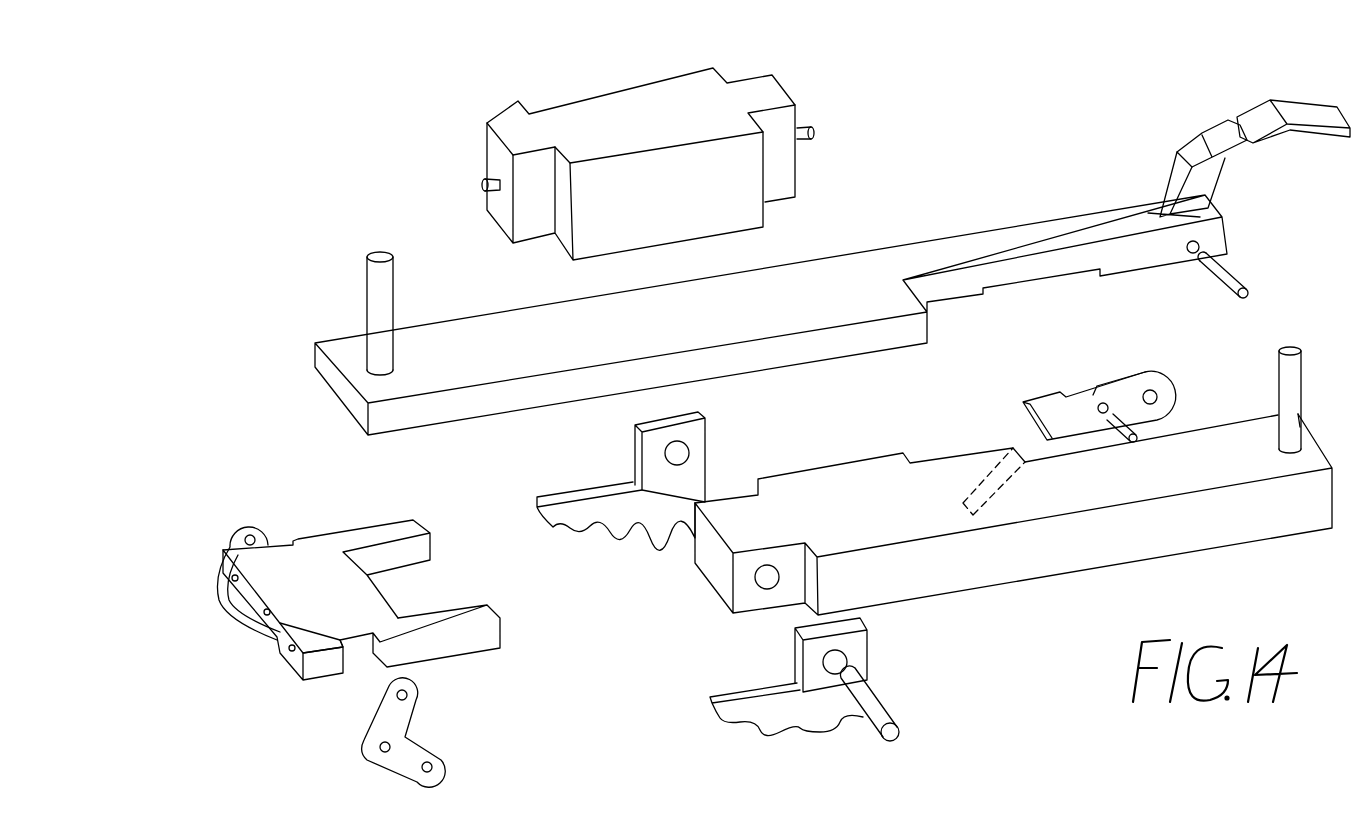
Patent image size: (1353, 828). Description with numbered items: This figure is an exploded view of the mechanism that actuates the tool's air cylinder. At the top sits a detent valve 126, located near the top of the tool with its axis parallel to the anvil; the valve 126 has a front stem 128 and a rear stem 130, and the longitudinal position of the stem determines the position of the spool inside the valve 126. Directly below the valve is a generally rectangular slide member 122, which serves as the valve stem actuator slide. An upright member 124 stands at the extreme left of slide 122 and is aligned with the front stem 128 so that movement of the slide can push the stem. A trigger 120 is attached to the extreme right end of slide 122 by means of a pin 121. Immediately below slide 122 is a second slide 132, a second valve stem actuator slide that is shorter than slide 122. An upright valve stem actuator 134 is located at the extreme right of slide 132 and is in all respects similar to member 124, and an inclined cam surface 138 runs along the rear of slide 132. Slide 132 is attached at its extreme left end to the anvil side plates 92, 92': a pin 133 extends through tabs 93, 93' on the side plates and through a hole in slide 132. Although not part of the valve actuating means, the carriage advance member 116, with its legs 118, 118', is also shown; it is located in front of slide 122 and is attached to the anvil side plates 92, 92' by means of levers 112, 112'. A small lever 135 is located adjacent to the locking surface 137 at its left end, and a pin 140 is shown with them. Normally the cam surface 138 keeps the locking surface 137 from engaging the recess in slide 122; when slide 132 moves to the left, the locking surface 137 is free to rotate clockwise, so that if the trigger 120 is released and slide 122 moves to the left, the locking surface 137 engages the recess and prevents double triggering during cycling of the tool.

The detent valve 126 is at (642, 100).
The front stem 128 is at (480, 184).
The rear stem 130 is at (814, 132).
The slide member 122 is at (937, 250).
The upright member 124 is at (370, 302).
The trigger 120 is at (1222, 132).
The pin 121 is at (1223, 272).
The second slide 132 is at (1263, 520).
The inclined cam surface 138 is at (975, 482).
The upright valve stem actuator 134 is at (1283, 382).
The locking surface 137 is at (1035, 397).
The small lever 135 is at (1093, 397).
The pin 140 is at (1180, 417).
The tab 93' is at (710, 457).
The anvil side plate 92' is at (609, 500).
The tab 93 is at (868, 655).
The anvil side plate 92 is at (786, 734).
The pin 133 is at (870, 705).
The bracket leg 118' is at (339, 550).
The bracket leg 118 is at (432, 636).
The carriage advance member 116 is at (287, 658).
The lever 112' is at (238, 568).
The lever 112 is at (434, 732).